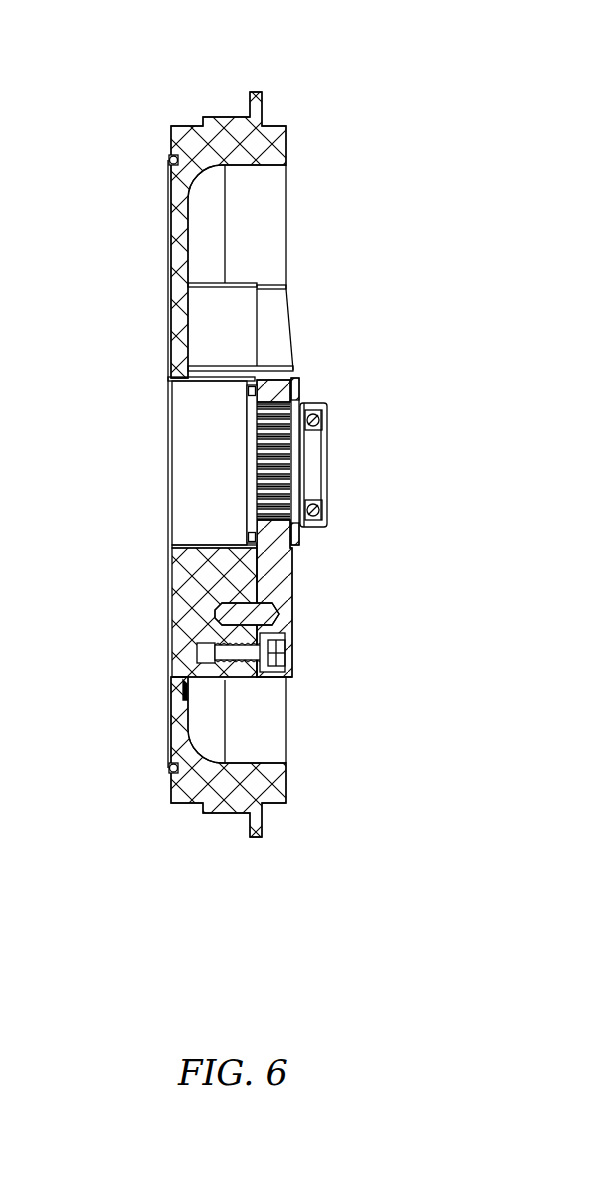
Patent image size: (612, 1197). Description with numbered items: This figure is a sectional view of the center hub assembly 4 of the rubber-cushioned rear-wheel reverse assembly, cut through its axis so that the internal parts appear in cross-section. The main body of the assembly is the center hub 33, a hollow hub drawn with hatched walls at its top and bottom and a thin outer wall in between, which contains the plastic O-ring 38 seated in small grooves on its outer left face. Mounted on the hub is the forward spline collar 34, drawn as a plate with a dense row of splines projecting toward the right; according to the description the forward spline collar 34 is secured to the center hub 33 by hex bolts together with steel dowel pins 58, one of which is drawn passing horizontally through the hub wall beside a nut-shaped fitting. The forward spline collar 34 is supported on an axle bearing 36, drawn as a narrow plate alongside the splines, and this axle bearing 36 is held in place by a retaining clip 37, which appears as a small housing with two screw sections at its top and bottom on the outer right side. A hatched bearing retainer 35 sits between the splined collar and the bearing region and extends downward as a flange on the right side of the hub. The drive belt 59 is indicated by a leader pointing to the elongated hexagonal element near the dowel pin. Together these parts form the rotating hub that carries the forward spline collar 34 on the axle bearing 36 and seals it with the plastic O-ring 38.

The center hub assembly 4 is at (221, 116).
The center hub 33 is at (221, 813).
The forward spline collar 34 is at (256, 508).
The bearing retainer 35 is at (304, 549).
The axle bearing 36 is at (325, 503).
The retaining clip 37 is at (309, 452).
The plastic O-ring 38 is at (167, 766).
The steel dowel pins 58 is at (288, 661).
The drive belt 59 is at (281, 620).